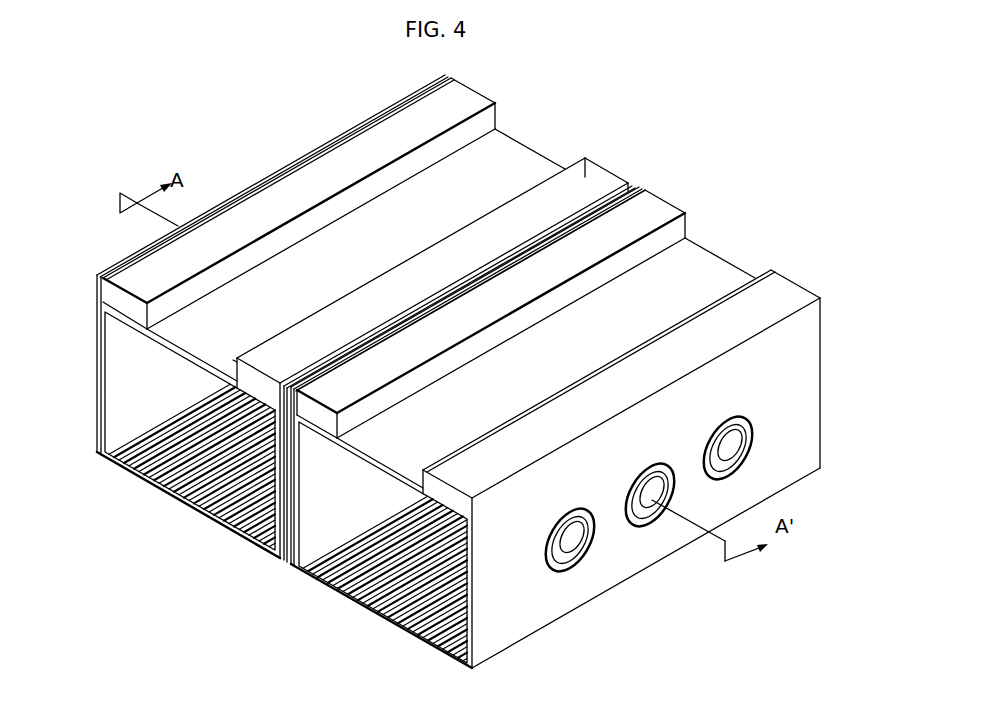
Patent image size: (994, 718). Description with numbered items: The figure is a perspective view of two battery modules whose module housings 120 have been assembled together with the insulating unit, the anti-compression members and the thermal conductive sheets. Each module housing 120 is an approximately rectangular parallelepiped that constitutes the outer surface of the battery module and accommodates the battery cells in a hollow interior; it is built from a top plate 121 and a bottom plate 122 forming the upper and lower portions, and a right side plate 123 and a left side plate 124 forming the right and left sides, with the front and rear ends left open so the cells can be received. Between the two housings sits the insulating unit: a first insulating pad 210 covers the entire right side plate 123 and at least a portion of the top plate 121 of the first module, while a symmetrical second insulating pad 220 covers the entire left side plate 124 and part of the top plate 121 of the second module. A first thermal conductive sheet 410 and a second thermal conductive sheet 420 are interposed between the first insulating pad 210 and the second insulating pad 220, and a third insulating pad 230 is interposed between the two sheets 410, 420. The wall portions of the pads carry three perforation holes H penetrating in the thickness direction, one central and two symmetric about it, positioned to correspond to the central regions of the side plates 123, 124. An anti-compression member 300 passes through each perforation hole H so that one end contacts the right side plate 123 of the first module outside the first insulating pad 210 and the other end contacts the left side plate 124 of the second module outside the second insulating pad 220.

The module housing 120 is at (505, 130).
The top plate 121 is at (517, 162).
The bottom plate 122 is at (197, 508).
The right side plate 123 is at (257, 500).
The left side plate 124 is at (118, 387).
The first insulating pad 210 is at (597, 167).
The second insulating pad 220 is at (675, 237).
The third insulating pad 230 is at (637, 185).
The first thermal conductive sheet 410 is at (583, 180).
The second thermal conductive sheet 420 is at (648, 217).
The anti-compression member 300 is at (555, 574).
The perforation hole H is at (583, 547).